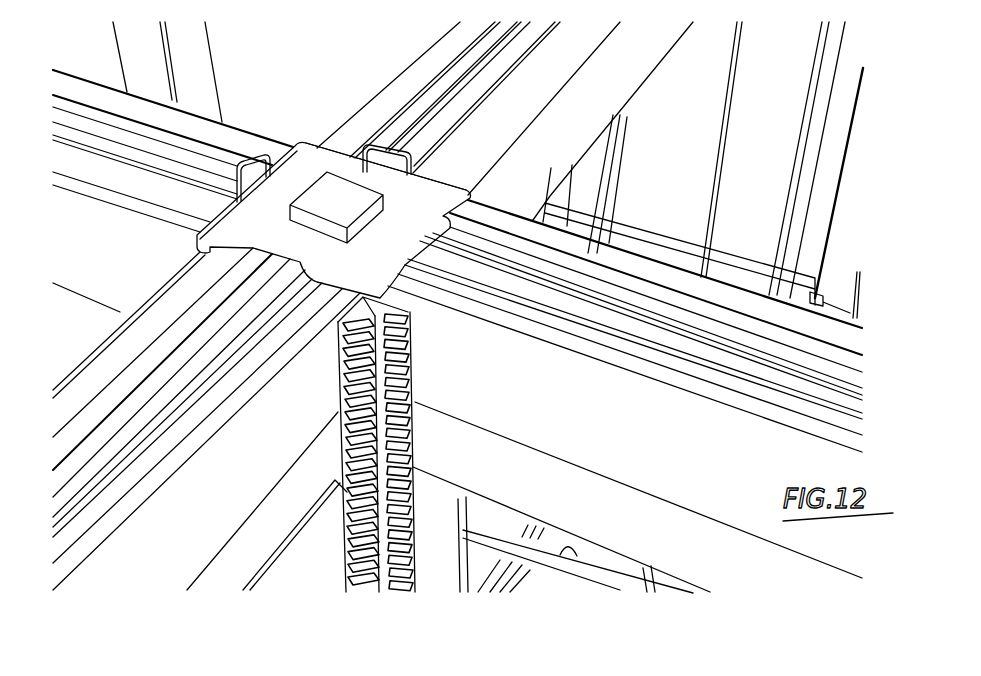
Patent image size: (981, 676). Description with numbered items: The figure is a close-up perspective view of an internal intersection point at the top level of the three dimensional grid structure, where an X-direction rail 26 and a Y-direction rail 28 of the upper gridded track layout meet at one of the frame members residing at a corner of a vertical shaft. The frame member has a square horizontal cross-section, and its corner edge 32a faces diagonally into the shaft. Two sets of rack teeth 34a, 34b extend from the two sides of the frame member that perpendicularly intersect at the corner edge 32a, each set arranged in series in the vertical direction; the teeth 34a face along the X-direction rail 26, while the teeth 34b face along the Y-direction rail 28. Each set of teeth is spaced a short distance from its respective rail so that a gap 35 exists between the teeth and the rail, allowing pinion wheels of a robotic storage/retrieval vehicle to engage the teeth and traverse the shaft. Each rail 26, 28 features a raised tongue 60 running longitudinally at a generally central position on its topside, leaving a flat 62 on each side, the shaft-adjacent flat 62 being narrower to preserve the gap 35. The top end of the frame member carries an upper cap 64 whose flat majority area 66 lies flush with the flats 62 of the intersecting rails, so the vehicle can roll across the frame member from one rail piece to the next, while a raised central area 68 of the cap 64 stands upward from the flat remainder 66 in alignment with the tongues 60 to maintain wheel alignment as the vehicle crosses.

The X-direction rail 26 is at (713, 298).
The Y-direction rail 28 is at (158, 318).
The raised tongue 60 is at (210, 153).
The flat 62 is at (200, 133).
The upper cap 64 is at (293, 176).
The flat majority area 66 is at (319, 150).
The raised central area 68 is at (340, 218).
The gap 35 is at (330, 322).
The corner edge 32a is at (408, 324).
The rack teeth (X-direction set) 34a is at (412, 388).
The rack teeth (Y-direction set) 34b is at (345, 405).